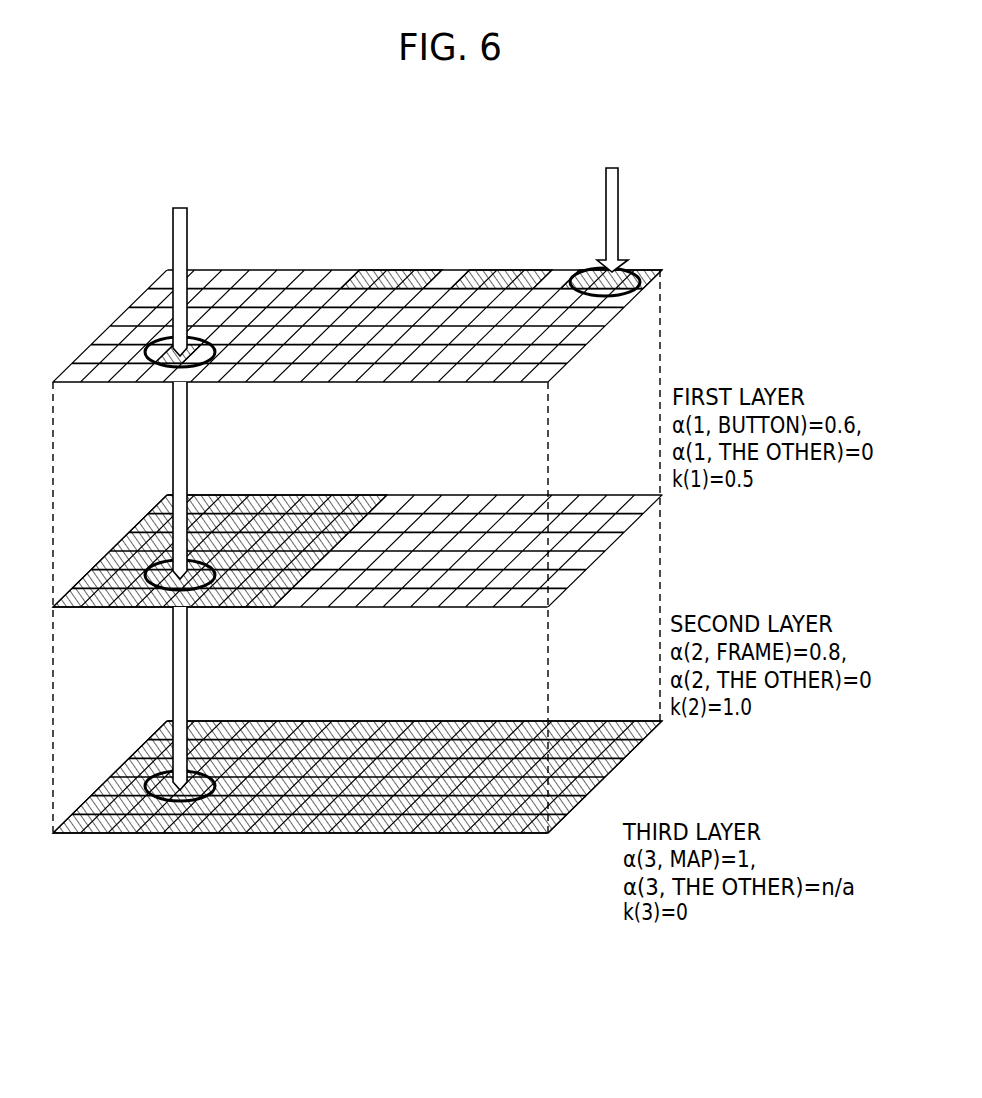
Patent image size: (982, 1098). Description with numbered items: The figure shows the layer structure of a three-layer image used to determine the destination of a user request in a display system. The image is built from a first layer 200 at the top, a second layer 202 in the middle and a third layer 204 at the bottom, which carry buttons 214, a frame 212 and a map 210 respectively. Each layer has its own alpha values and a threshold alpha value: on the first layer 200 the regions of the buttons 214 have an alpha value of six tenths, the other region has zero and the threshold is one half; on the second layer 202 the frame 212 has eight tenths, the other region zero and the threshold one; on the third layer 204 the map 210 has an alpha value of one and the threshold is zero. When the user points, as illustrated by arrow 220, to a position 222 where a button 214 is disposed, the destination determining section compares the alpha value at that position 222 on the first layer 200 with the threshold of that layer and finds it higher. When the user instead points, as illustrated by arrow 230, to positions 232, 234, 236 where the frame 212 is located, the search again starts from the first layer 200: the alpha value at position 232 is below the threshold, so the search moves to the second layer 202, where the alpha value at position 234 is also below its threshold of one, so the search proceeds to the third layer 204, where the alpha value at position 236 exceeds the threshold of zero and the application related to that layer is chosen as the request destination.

The first layer 200 is at (597, 330).
The second layer 202 is at (603, 555).
The third layer 204 is at (603, 782).
The map 210 is at (125, 772).
The frame 212 is at (125, 547).
The buttons 214 is at (375, 278).
The arrow 220 is at (620, 212).
The position 222 is at (637, 272).
The arrow 230 is at (181, 246).
The position 232 is at (140, 354).
The position 234 is at (200, 592).
The position 236 is at (158, 800).